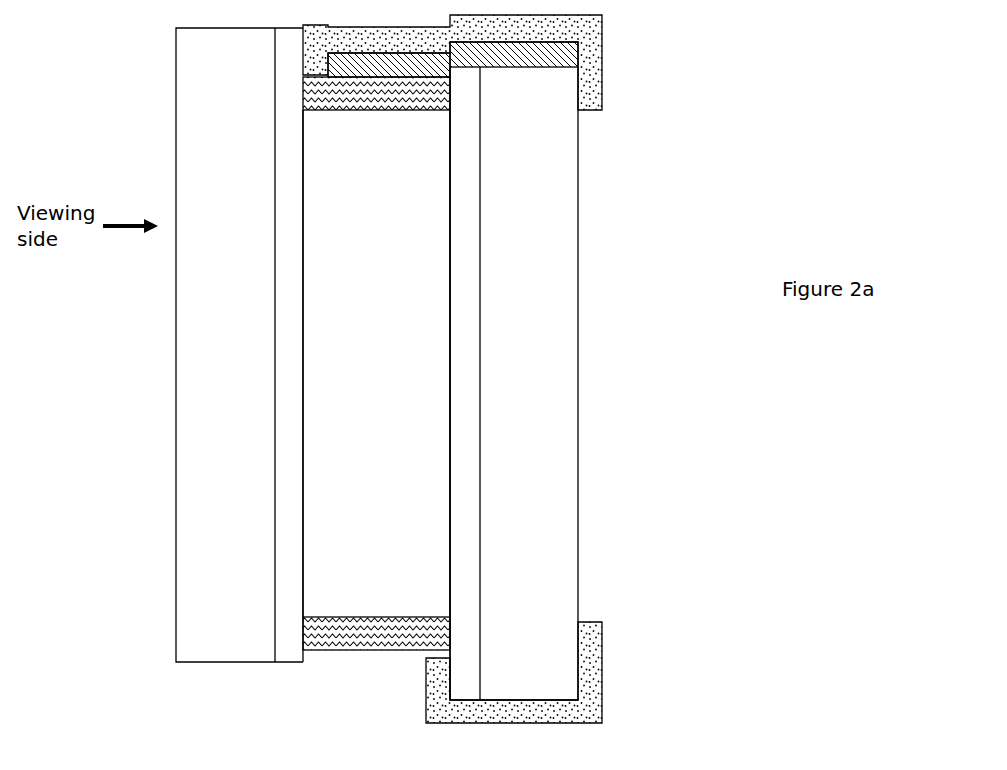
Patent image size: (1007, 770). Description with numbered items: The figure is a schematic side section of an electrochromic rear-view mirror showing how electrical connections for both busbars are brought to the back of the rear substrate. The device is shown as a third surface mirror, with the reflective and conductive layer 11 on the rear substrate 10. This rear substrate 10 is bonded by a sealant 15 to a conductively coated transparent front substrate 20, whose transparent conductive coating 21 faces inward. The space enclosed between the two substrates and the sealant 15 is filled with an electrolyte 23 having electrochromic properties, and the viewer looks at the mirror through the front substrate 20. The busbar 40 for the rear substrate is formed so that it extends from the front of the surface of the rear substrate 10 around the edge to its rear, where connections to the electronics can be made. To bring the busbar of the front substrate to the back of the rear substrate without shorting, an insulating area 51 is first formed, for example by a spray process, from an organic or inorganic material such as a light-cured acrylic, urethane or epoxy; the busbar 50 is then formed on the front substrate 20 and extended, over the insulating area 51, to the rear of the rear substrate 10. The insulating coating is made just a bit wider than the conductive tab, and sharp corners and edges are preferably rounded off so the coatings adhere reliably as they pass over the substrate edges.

The substrate 10 is at (517, 382).
The reflective and conductive layer 11 is at (462, 478).
The sealant 15 is at (303, 100).
The conductively coated transparent substrate 20 is at (193, 335).
The conductive coating 21 is at (285, 413).
The electrolyte 23 is at (345, 525).
The busbar 40 is at (593, 645).
The busbar 50 is at (590, 95).
The insulating area 51 is at (557, 60).